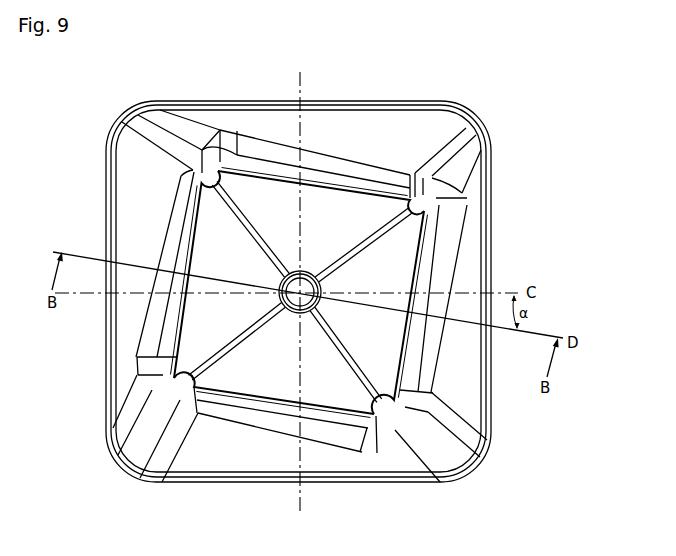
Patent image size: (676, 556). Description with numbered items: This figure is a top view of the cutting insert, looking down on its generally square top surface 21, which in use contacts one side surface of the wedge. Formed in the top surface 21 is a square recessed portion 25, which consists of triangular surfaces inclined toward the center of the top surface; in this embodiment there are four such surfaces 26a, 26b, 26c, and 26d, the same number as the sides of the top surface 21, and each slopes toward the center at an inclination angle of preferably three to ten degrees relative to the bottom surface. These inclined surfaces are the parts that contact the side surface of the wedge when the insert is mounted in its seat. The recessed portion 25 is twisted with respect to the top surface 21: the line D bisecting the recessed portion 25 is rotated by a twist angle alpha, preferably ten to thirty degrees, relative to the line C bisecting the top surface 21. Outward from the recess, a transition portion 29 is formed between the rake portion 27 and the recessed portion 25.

The top surface 21 is at (465, 273).
The recessed portion 25 is at (352, 220).
The inclined surface 26a is at (383, 353).
The inclined surface 26b is at (263, 375).
The inclined surface 26c is at (193, 330).
The inclined surface 26d is at (272, 195).
The rake portion 27 is at (472, 238).
The transition portion 29 is at (331, 167).